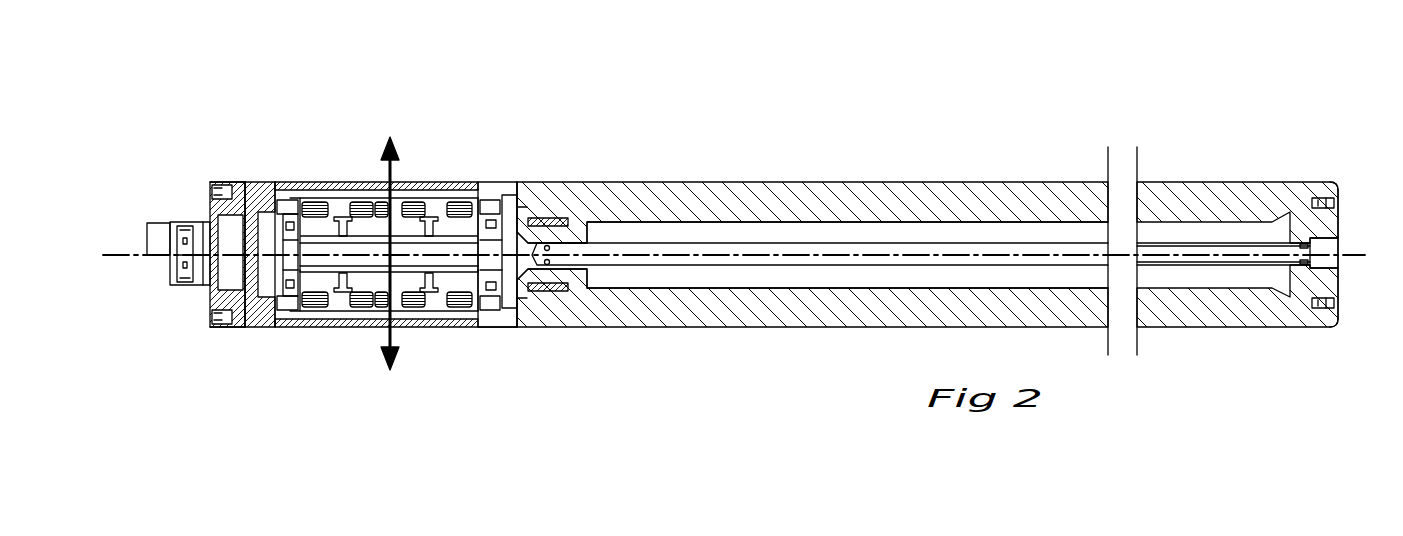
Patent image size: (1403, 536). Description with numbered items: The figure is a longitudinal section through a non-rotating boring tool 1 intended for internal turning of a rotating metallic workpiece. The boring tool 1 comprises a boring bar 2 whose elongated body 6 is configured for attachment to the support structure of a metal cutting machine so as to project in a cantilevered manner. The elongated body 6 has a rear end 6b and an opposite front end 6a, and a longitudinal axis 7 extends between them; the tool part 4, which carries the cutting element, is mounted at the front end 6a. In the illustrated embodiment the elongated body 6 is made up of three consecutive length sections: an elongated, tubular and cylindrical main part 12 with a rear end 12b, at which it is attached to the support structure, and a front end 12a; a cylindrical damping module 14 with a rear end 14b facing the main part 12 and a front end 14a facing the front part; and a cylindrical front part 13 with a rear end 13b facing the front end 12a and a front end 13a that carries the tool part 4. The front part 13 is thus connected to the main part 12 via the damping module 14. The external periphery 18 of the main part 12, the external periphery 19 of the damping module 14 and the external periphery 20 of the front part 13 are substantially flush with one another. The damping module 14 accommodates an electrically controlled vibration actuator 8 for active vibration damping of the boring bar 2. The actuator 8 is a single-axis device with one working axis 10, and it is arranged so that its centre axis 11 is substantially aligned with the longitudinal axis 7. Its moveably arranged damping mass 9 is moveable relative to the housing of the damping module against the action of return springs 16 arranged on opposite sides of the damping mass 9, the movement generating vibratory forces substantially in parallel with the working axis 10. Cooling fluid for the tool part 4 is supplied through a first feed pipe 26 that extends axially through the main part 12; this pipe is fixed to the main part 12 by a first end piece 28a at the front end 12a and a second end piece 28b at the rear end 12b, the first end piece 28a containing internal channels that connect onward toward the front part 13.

The boring tool 1 is at (662, 122).
The boring bar 2 is at (968, 153).
The tool part 4 is at (212, 217).
The elongated body 6 is at (818, 330).
The front end 6a is at (223, 333).
The rear end 6b is at (1335, 338).
The longitudinal axis 7 is at (885, 255).
The vibration actuator 8 is at (389, 247).
The damping mass 9 is at (352, 272).
The working axis 10 is at (393, 180).
The centre axis 11 is at (447, 255).
The main part 12 is at (927, 245).
The front end 12a is at (510, 178).
The rear end 12b is at (1333, 173).
The front part 13 is at (260, 190).
The front end 13a is at (226, 178).
The rear end 13b is at (285, 178).
The damping module 14 is at (460, 330).
The front end 14a is at (293, 333).
The rear end 14b is at (508, 333).
The return springs 16 is at (363, 203).
The external periphery 18 is at (810, 182).
The external periphery 19 is at (495, 182).
The external periphery 20 is at (263, 330).
The first feed pipe 26 is at (1198, 243).
The first end piece 28a is at (547, 275).
The second end piece 28b is at (1307, 283).